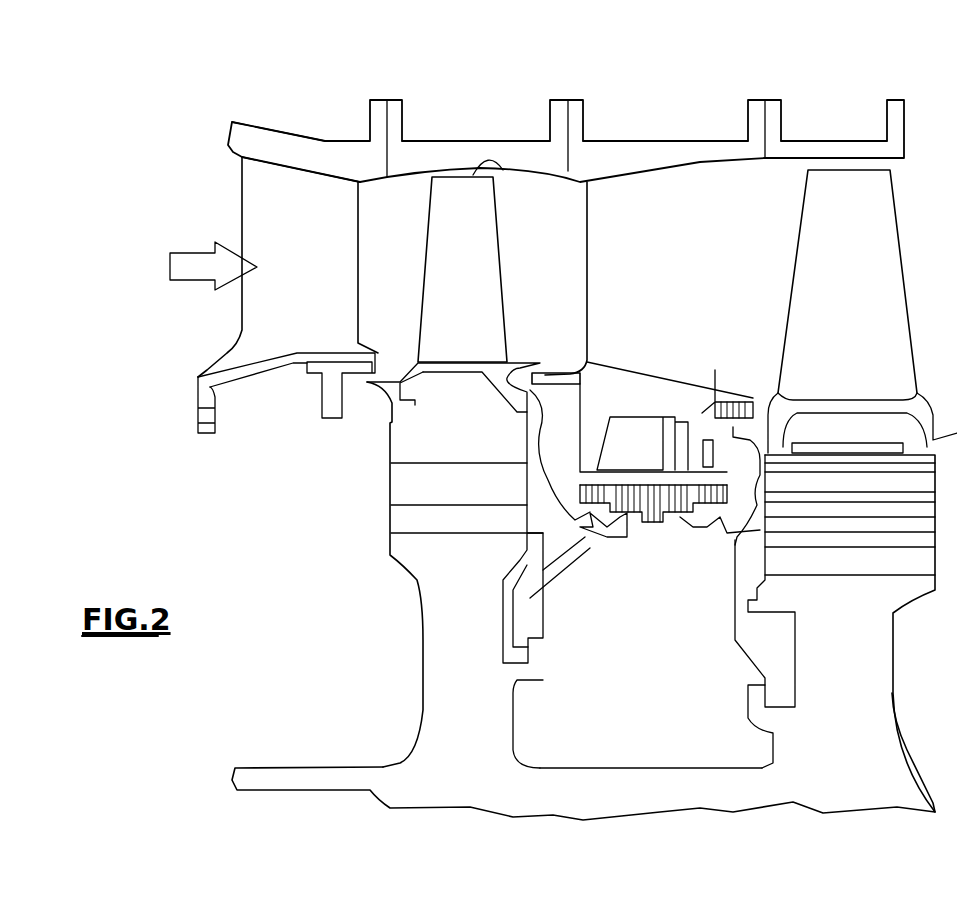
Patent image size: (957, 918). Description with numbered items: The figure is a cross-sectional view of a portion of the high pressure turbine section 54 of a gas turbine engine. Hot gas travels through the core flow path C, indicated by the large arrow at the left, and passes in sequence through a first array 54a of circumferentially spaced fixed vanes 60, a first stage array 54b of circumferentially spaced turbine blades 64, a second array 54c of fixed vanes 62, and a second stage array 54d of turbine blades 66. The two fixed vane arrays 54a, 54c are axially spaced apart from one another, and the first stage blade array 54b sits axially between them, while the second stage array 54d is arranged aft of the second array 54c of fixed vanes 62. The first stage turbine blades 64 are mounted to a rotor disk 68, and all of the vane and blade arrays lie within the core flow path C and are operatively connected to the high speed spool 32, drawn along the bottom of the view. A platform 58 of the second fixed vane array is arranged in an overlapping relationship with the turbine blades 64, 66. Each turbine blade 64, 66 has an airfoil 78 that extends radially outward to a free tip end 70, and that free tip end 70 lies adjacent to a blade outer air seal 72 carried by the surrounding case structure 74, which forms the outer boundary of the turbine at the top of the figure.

The high speed spool 32 is at (228, 770).
The high pressure turbine section 54 is at (696, 80).
The first array of fixed vanes 54a is at (294, 115).
The first stage array of turbine blades 54b is at (477, 128).
The second array of fixed vanes 54c is at (624, 128).
The second stage array of turbine blades 54d is at (831, 128).
The platform 58 is at (552, 380).
The fixed vane 60 is at (233, 228).
The fixed vane 62 is at (580, 218).
The turbine blade 64 is at (422, 243).
The turbine blade 66 is at (792, 255).
The rotor disk 68 is at (495, 712).
The free tip end 70 is at (503, 170).
The blade outer air seal 72 is at (413, 152).
The case structure 74 is at (559, 118).
The airfoil 78 is at (313, 195).
The core flow path C is at (196, 280).